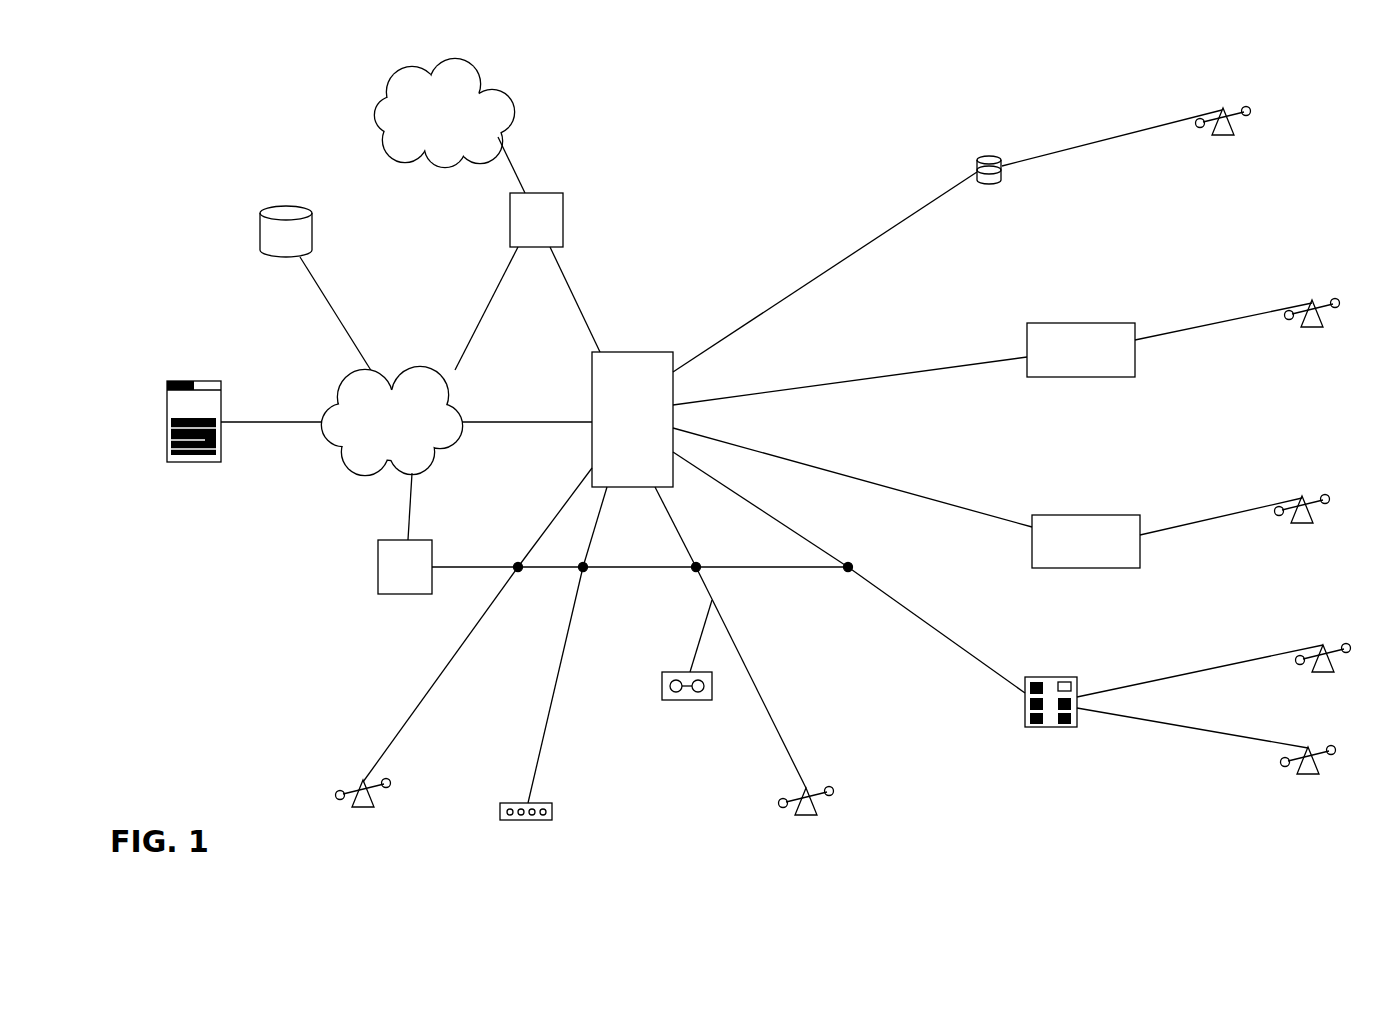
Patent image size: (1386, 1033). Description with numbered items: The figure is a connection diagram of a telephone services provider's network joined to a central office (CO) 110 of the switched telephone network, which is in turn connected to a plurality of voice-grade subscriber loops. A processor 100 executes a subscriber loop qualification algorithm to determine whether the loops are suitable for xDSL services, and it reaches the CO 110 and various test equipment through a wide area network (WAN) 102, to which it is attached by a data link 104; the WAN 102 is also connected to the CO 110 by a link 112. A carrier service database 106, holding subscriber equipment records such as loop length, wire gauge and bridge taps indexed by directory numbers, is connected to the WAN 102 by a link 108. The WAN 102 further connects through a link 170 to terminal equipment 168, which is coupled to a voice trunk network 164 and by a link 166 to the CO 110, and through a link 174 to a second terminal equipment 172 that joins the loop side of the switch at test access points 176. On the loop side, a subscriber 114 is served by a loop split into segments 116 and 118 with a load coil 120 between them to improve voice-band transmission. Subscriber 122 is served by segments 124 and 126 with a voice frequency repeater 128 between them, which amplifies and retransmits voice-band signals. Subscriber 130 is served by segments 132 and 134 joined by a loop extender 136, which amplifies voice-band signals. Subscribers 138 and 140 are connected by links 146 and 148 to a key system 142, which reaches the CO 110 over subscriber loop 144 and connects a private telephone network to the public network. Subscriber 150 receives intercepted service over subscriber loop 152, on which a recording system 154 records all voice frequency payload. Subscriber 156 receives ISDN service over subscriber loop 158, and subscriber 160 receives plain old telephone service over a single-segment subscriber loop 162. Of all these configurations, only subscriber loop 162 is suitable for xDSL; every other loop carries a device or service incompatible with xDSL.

The processor 100 is at (194, 380).
The wide area network (WAN) 102 is at (342, 464).
The data link 104 is at (260, 420).
The carrier service database 106 is at (289, 210).
The link 108 is at (331, 302).
The central office (CO) 110 is at (650, 352).
The WAN to switch link 112 is at (536, 423).
The subscriber 114 is at (1223, 107).
The subscriber loop segment 116 is at (790, 292).
The subscriber loop segment 118 is at (1114, 140).
The load coil 120 is at (990, 156).
The subscriber 122 is at (1313, 299).
The subscriber loop segment 124 is at (850, 380).
The subscriber loop segment 126 is at (1228, 320).
The voice frequency repeater 128 is at (1082, 323).
The subscriber 130 is at (1303, 495).
The subscriber loop segment 132 is at (856, 478).
The subscriber loop segment 134 is at (1225, 516).
The loop extender 136 is at (1090, 515).
The subscriber 138 is at (1324, 644).
The subscriber 140 is at (1309, 746).
The key system 142 is at (1054, 677).
The subscriber loop 144 is at (894, 602).
The link 146 is at (1210, 670).
The link 148 is at (1165, 726).
The subscriber 150 is at (808, 787).
The subscriber loop 152 is at (774, 722).
The recording system 154 is at (662, 688).
The subscriber 156 is at (553, 809).
The subscriber loop 158 is at (574, 613).
The subscriber 160 is at (390, 782).
The subscriber loop 162 is at (491, 606).
The voice trunk network 164 is at (517, 114).
The link from TE to switch 166 is at (578, 302).
The terminal equipment (TE) 168 is at (564, 220).
The link from WAN to TE 170 is at (466, 350).
The terminal equipment (TE) 172 is at (378, 572).
The link from WAN to TE 174 is at (408, 512).
The test access points 176 is at (513, 562).